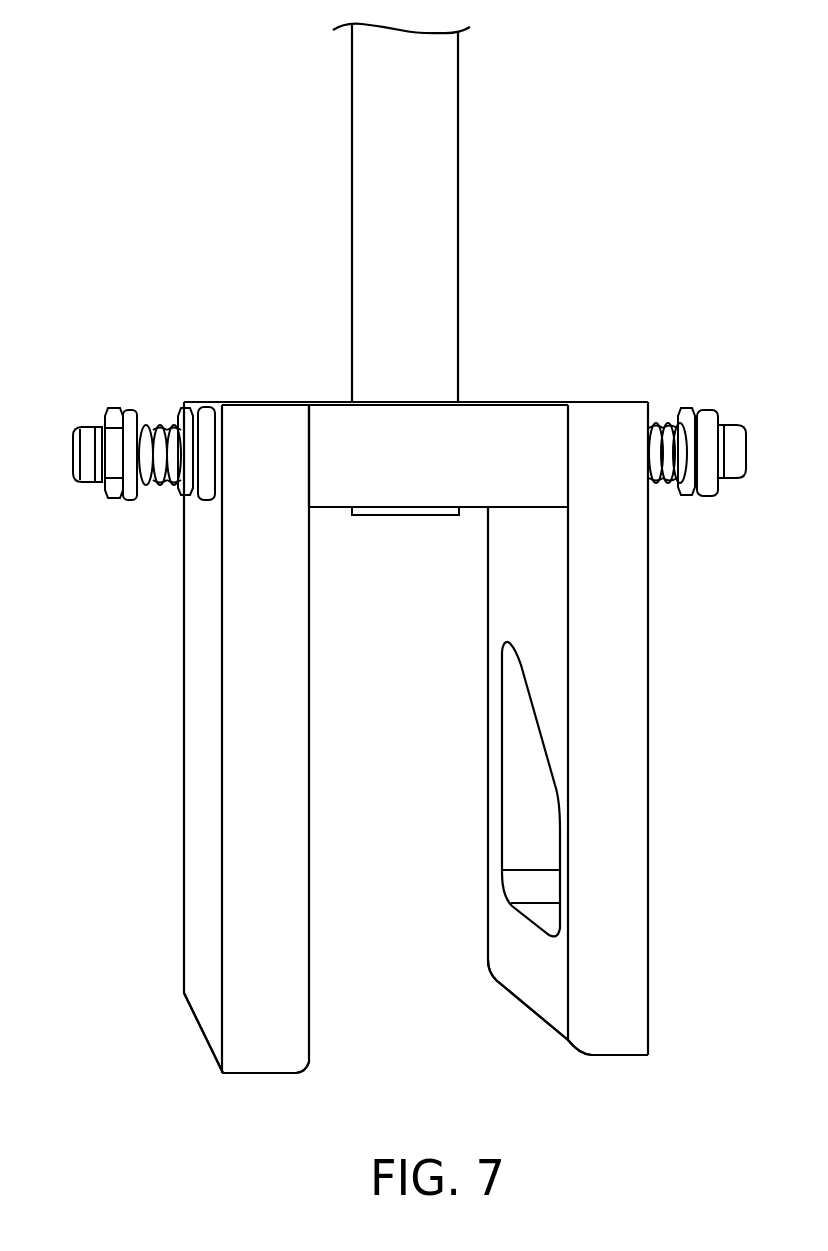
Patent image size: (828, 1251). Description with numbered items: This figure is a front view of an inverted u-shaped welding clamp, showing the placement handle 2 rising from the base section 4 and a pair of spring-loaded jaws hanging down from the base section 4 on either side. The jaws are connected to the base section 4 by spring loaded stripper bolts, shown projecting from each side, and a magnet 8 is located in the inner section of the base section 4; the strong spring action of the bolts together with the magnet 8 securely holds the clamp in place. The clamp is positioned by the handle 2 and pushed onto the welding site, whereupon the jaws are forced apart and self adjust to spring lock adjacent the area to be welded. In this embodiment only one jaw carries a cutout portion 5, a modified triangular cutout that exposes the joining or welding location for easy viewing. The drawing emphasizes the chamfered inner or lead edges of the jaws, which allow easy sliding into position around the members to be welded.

The placement handle 2 is at (445, 227).
The base section 4 is at (500, 414).
The cutout portion 5 is at (510, 745).
The magnet 8 is at (408, 515).